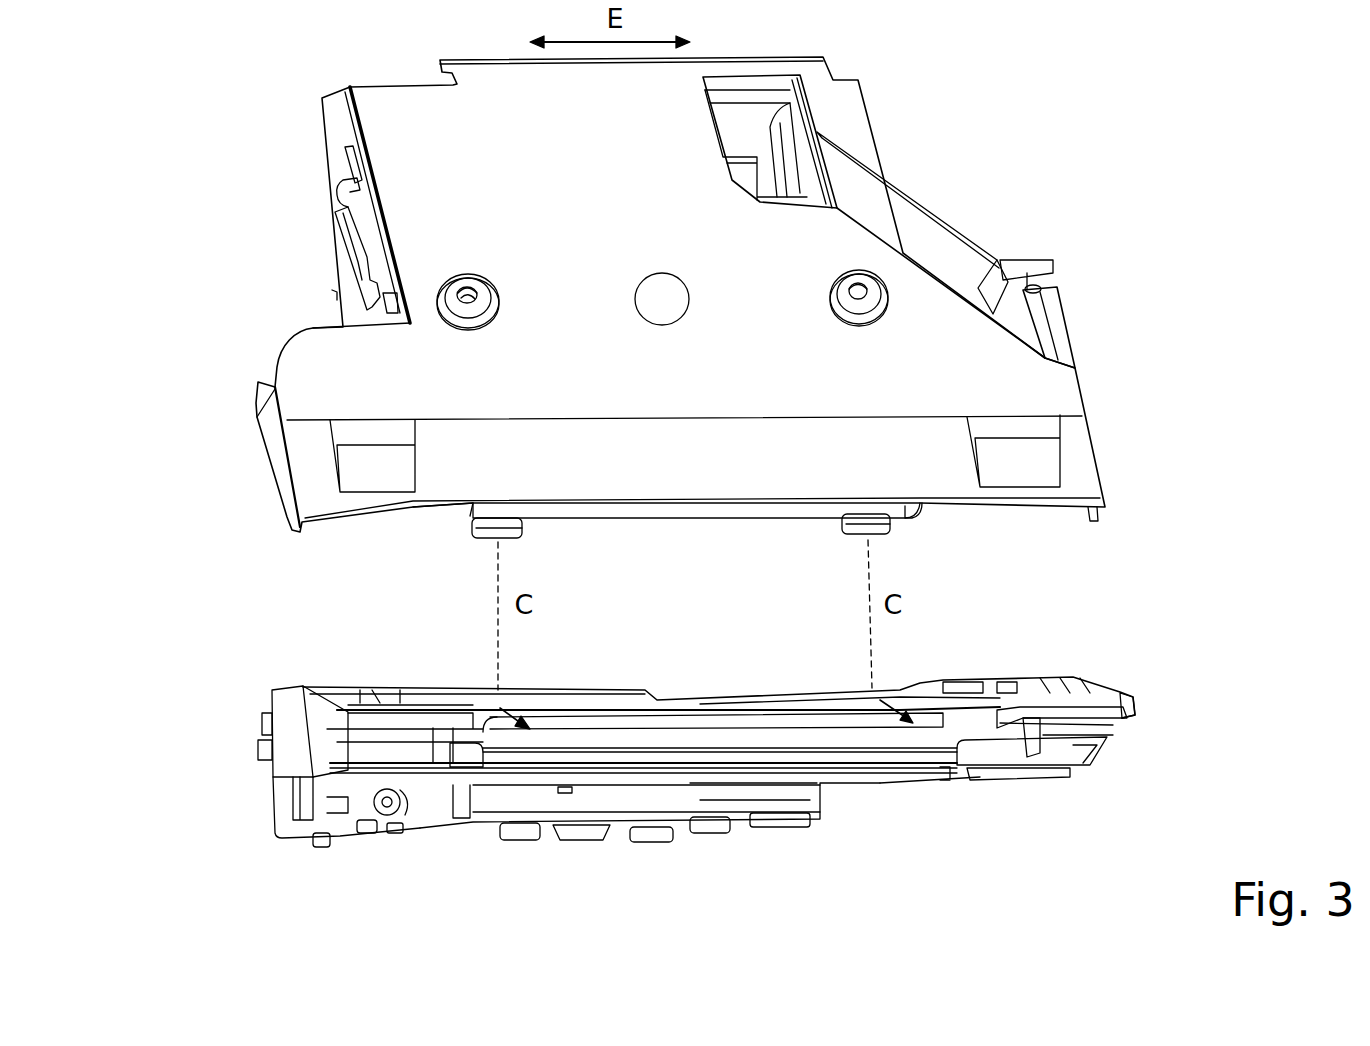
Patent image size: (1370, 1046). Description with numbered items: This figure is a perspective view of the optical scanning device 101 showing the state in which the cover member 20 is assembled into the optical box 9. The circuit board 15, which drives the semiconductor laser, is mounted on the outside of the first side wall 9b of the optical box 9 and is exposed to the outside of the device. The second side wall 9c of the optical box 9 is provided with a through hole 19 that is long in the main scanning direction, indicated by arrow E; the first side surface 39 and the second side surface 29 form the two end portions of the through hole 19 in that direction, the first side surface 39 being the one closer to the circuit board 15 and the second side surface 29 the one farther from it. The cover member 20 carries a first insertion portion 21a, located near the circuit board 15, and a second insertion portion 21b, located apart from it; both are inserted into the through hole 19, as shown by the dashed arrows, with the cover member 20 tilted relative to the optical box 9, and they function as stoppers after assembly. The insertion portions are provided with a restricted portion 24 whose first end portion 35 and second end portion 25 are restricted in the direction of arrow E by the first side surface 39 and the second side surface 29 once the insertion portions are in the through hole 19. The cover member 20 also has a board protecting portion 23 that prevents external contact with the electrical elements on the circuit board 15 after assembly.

The optical scanning device 101 is at (963, 45).
The cover member 20 is at (413, 100).
The board protecting portion 23 is at (327, 237).
The restricted portion 24 is at (708, 507).
The second end portion 25 is at (920, 507).
The first end portion 35 is at (460, 513).
The first insertion portion 21a is at (490, 533).
The second insertion portion 21b is at (847, 527).
The optical box 9 is at (972, 747).
The circuit board 15 is at (283, 806).
The first side wall 9b is at (420, 827).
The second side wall 9c is at (755, 747).
The through hole 19 is at (810, 717).
The second side surface 29 is at (960, 698).
The first side surface 39 is at (480, 717).